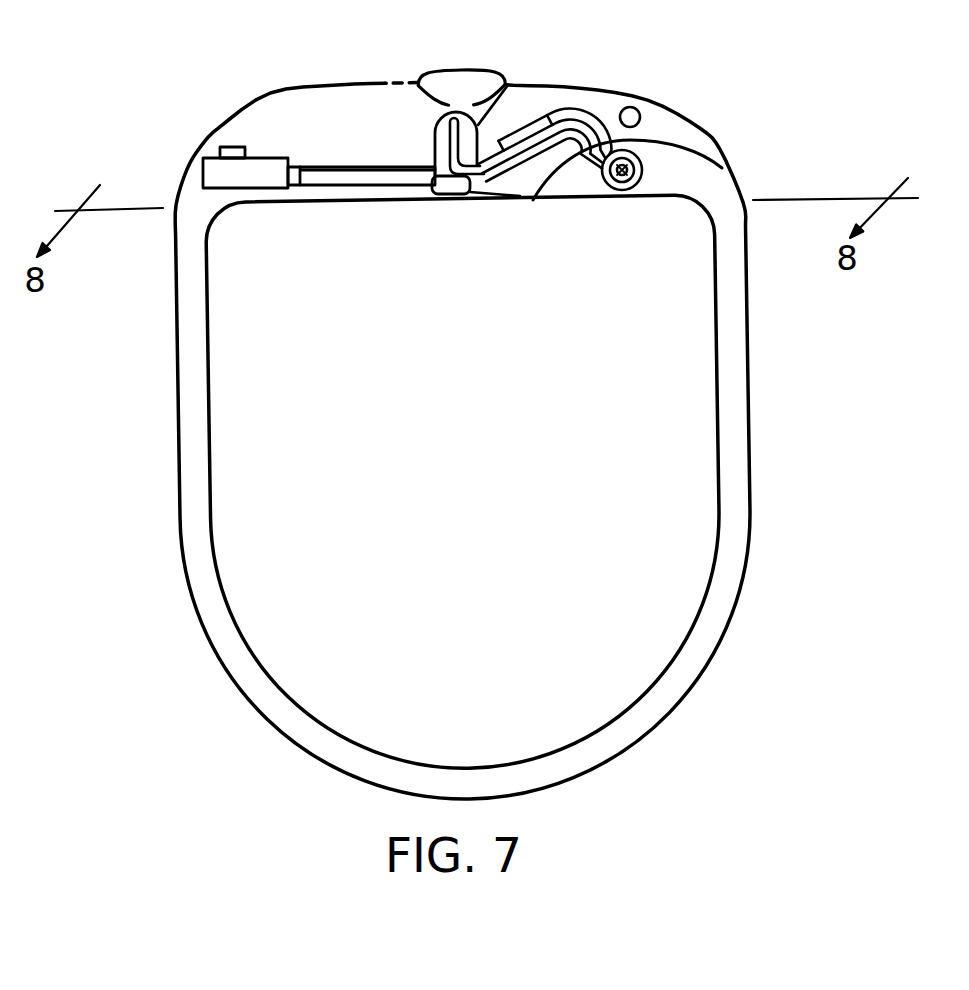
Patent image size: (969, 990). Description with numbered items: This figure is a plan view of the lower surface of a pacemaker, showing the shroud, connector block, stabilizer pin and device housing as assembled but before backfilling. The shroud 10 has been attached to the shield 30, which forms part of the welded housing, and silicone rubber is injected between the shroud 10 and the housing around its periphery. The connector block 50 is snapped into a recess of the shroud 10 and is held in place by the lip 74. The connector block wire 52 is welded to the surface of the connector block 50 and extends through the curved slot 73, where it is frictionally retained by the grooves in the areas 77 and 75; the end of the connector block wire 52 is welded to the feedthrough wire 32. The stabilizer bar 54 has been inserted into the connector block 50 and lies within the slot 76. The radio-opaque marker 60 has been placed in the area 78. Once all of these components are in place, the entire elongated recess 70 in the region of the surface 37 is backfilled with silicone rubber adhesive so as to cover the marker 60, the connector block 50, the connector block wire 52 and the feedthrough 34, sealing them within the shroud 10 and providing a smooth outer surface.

The shroud 10 is at (687, 122).
The shield 30 is at (698, 577).
The feedthrough wire 32 is at (707, 167).
The feedthrough 34 is at (607, 188).
The surface 37 is at (676, 180).
The connector block 50 is at (437, 140).
The connector block wire 52 is at (457, 196).
The stabilizer bar 54 is at (337, 167).
The radio-opaque marker 60 is at (200, 170).
The elongated recess 70 is at (378, 207).
The curved slot 73 is at (537, 118).
The lip 74 is at (508, 83).
The grooved area 75 is at (501, 172).
The slot 76 is at (352, 190).
The grooved area 77 is at (585, 105).
The marker area 78 is at (238, 140).